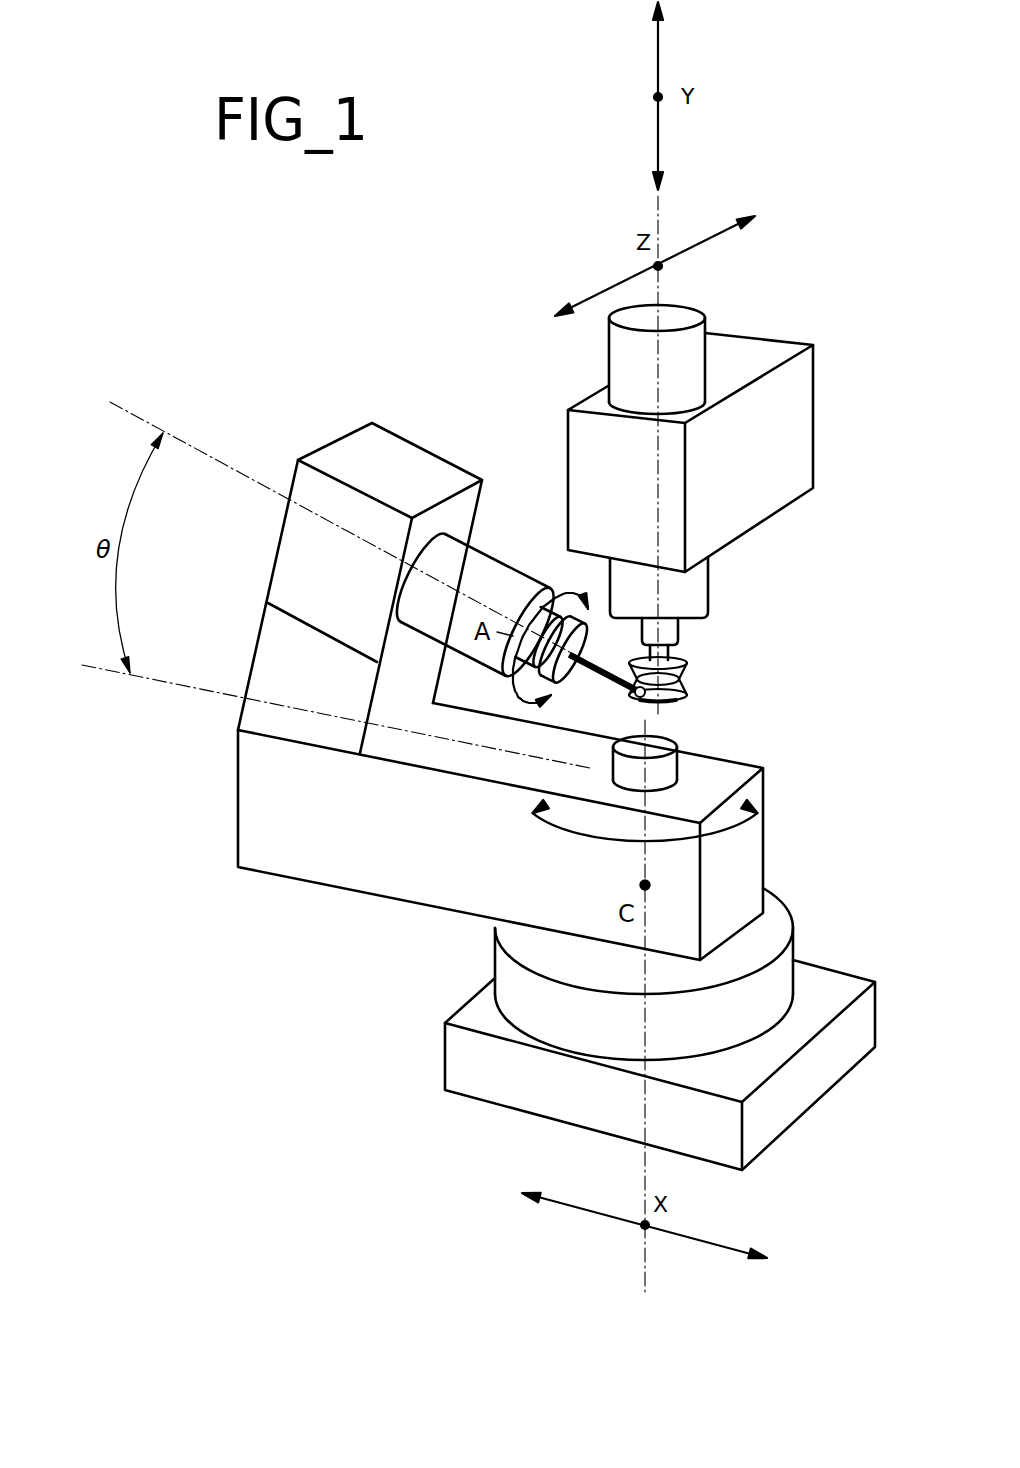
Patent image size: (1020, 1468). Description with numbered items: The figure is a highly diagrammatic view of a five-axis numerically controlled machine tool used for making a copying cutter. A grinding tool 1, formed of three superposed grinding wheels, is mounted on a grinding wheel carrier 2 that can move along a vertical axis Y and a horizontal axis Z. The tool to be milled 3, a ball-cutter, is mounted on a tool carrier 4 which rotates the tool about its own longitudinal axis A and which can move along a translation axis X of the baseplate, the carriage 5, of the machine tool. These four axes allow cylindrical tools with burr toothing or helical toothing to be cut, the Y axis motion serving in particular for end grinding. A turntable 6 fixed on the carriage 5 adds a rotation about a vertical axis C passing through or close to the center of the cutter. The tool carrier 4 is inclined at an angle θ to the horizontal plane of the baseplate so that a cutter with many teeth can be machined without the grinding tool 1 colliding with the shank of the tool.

The grinding tool 1 is at (688, 680).
The grinding wheel carrier 2 is at (688, 593).
The tool to be milled 3 is at (633, 695).
The tool carrier 4 is at (480, 570).
The carriage 5 is at (812, 1085).
The turntable 6 is at (772, 932).